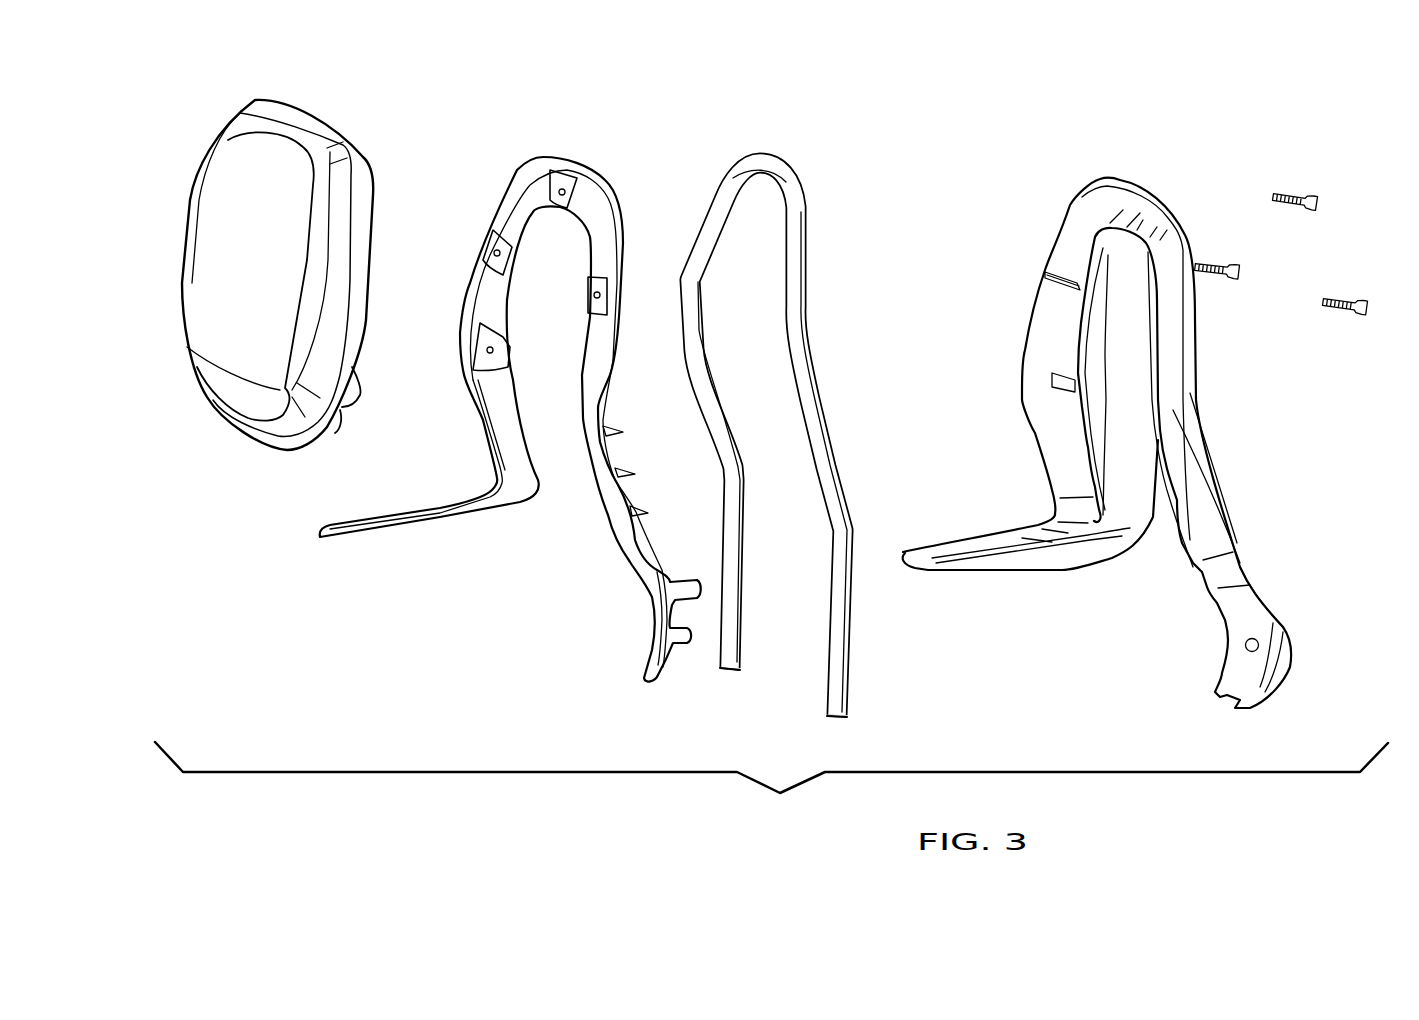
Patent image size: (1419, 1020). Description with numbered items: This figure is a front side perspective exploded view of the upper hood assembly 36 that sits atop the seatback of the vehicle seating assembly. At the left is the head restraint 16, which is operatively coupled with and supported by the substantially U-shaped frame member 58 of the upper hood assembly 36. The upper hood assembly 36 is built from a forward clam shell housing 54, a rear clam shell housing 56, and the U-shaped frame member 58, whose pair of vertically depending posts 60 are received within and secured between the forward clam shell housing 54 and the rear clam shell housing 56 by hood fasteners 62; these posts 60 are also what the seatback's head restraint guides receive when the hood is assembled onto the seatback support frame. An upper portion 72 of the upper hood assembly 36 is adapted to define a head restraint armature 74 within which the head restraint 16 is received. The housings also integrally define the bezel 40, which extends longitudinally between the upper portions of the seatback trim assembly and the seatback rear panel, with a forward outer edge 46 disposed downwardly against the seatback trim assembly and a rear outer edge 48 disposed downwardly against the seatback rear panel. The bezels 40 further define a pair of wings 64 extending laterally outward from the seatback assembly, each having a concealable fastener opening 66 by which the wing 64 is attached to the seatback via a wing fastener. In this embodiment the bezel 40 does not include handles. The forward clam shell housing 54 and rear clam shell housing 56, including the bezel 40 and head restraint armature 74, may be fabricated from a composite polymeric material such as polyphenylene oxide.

The head restraint 16 is at (193, 290).
The upper hood assembly 36 is at (771, 787).
The integrated bezel 40 is at (1063, 535).
The forward outer edge 46 is at (1222, 613).
The rear outer edge 48 is at (1265, 613).
The forward clam shell housing 54 is at (540, 157).
The rear clam shell housing 56 is at (1143, 402).
The substantially U-shaped frame member 58 is at (792, 347).
The vertically depending posts 60 is at (733, 655).
The hood fasteners 62 is at (1343, 300).
The wings 64 is at (1262, 677).
The concealable fastener opening 66 is at (1262, 647).
The upper portion 72 is at (1123, 180).
The head restraint armature 74 is at (1190, 393).